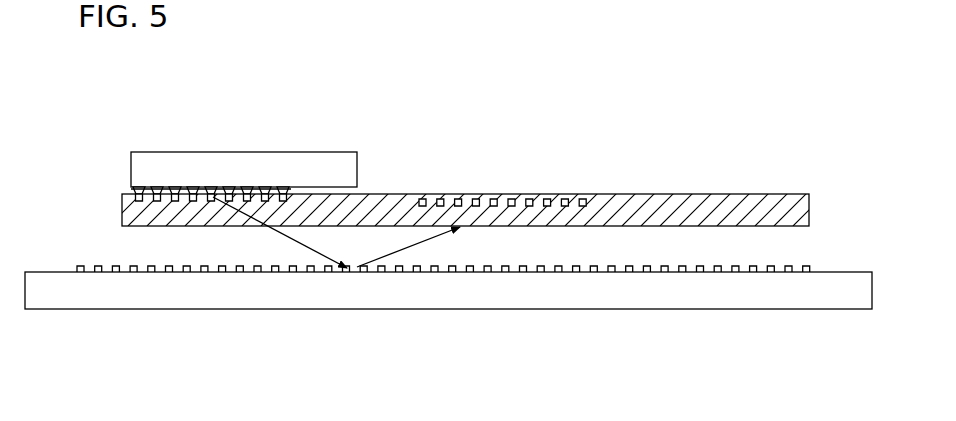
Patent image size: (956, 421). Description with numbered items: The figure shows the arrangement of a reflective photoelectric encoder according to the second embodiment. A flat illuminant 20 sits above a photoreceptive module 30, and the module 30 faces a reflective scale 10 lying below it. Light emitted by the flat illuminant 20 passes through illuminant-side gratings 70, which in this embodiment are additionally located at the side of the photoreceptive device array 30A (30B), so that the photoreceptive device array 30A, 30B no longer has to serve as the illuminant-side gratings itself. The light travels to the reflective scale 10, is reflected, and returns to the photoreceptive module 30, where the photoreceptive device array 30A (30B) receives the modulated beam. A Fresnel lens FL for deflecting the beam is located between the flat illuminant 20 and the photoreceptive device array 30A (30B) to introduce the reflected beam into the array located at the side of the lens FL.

The reflective scale 10 is at (360, 303).
The flat illuminant 20 is at (223, 160).
The photoreceptive module 30 is at (122, 212).
The photoreceptive device array 30A is at (503, 169).
The photoreceptive device array 30B is at (508, 193).
The illuminant-side gratings 70 is at (302, 190).
The Fresnel lens FL is at (132, 190).